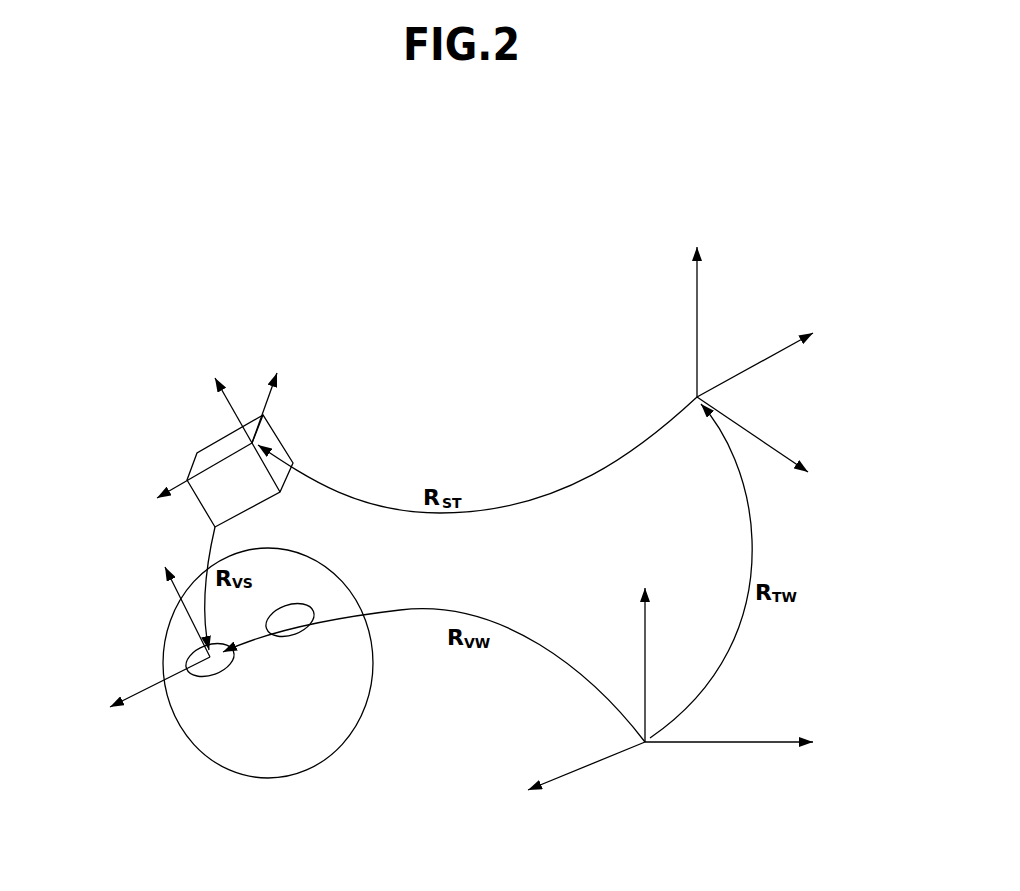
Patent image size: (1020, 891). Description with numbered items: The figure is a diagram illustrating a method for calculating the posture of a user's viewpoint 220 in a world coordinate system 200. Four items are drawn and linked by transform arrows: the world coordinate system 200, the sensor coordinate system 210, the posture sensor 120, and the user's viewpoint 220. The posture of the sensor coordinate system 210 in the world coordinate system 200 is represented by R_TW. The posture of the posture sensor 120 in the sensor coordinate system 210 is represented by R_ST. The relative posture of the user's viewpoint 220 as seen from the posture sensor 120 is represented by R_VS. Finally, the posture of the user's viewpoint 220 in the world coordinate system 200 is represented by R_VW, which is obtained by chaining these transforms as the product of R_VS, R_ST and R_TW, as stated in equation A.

The posture sensor 120 is at (210, 443).
The sensor coordinate system 210 is at (693, 396).
The user's viewpoint 220 is at (213, 670).
The world coordinate system 200 is at (645, 748).